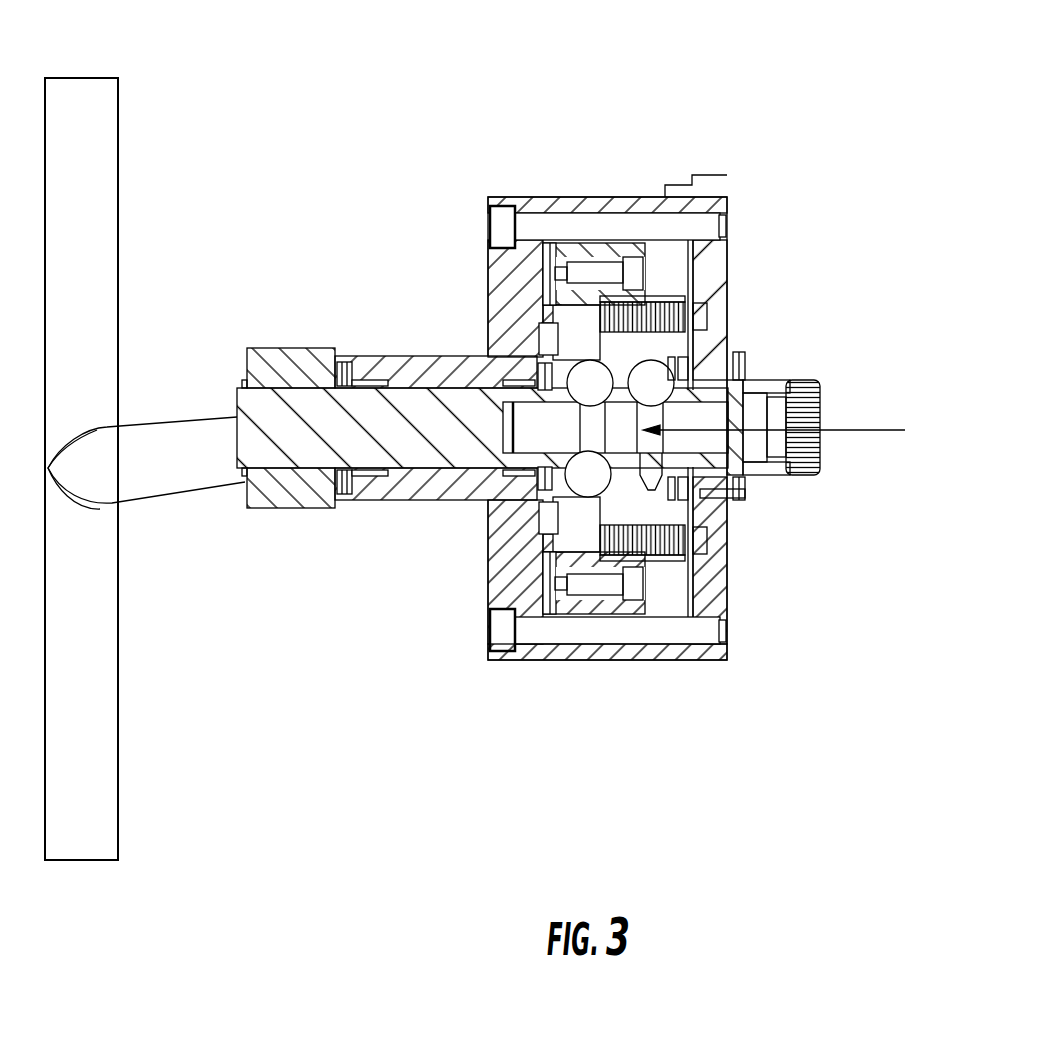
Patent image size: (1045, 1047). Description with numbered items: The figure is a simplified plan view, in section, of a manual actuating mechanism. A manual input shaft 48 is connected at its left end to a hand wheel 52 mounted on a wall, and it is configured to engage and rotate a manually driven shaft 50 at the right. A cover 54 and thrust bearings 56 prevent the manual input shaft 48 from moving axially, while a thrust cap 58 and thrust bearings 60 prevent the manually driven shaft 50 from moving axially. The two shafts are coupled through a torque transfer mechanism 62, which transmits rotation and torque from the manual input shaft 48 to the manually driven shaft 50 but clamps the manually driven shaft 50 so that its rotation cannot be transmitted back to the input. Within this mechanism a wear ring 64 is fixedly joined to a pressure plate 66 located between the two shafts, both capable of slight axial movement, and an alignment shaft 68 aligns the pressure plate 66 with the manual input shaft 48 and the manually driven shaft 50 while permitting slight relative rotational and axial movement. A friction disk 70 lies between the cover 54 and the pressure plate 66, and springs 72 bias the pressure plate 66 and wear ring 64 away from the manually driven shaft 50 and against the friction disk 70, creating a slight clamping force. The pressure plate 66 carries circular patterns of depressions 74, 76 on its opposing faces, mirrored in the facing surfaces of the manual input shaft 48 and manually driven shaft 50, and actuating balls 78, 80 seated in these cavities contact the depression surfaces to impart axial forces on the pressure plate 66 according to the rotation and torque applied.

The manual input shaft 48 is at (235, 417).
The manually driven shaft 50 is at (712, 368).
The hand wheel 52 is at (103, 238).
The cover 54 is at (497, 197).
The thrust bearings 56 is at (537, 477).
The thrust cap 58 is at (720, 660).
The thrust bearings 60 is at (700, 495).
The torque transfer mechanism 62 is at (793, 427).
The wear ring 64 is at (560, 243).
The pressure plate 66 is at (626, 248).
The alignment shaft 68 is at (533, 407).
The friction disk 70 is at (548, 588).
The springs 72 is at (628, 545).
The depressions 74 is at (547, 503).
The depressions 76 is at (743, 474).
The actuating balls 78 is at (595, 382).
The actuating balls 80 is at (655, 382).